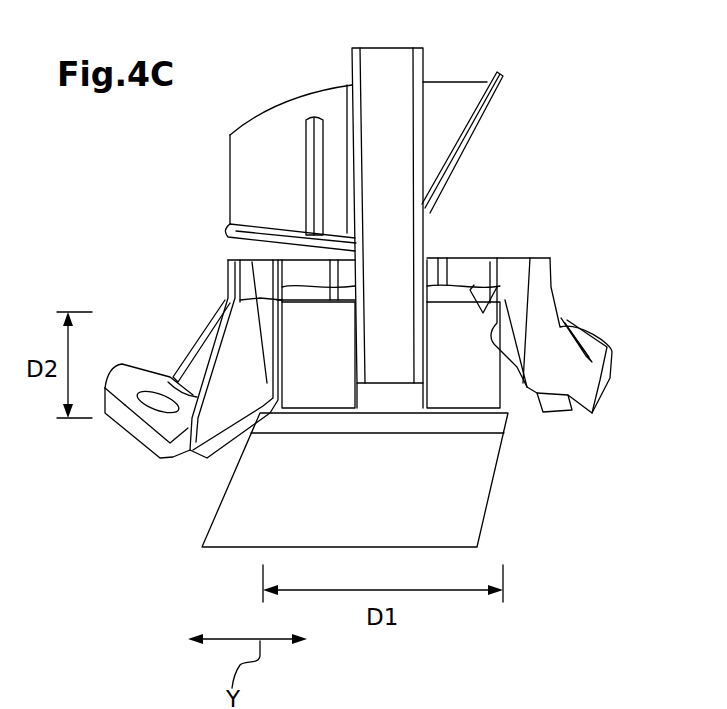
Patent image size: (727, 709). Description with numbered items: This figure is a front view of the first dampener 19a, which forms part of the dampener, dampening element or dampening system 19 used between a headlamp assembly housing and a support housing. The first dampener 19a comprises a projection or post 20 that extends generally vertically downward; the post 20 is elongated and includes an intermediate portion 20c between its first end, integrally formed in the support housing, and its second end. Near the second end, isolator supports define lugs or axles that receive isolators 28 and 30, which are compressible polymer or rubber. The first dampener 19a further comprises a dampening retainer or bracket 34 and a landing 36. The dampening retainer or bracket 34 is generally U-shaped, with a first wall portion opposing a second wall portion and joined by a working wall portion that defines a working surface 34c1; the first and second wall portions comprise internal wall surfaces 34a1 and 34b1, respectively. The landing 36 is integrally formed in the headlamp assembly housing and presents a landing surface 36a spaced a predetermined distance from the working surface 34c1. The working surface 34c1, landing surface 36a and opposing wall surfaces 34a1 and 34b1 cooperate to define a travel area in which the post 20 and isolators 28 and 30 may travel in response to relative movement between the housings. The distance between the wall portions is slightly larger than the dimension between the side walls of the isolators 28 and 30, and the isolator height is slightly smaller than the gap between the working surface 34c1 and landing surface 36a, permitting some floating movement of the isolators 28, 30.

The dampening system 19 is at (378, 127).
The first dampener 19a is at (522, 106).
The projection or post 20 is at (350, 68).
The intermediate portion 20c is at (398, 152).
The isolator 28 is at (463, 340).
The isolator 30 is at (297, 317).
The dampening retainer or bracket 34 is at (617, 383).
The internal wall surface 34a1 is at (502, 321).
The internal wall surface 34b1 is at (290, 357).
The working surface 34c1 is at (484, 290).
The landing 36 is at (465, 513).
The landing surface 36a is at (393, 413).